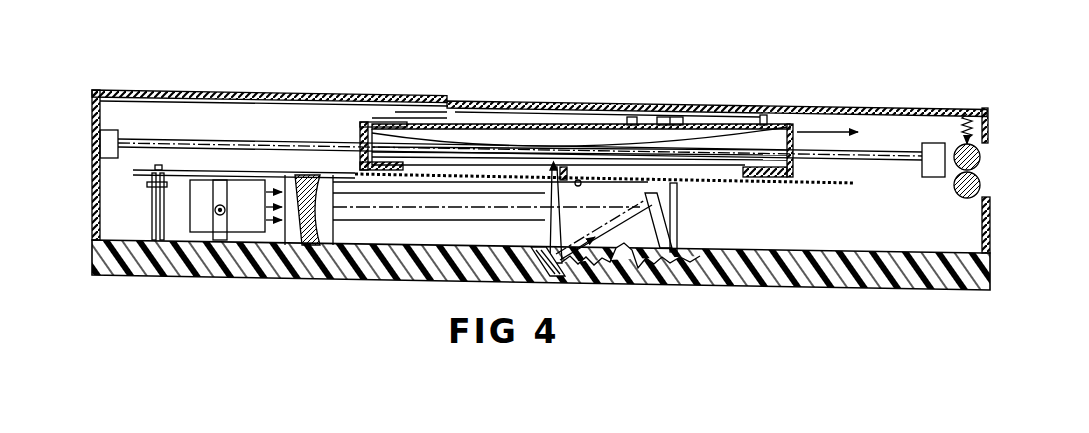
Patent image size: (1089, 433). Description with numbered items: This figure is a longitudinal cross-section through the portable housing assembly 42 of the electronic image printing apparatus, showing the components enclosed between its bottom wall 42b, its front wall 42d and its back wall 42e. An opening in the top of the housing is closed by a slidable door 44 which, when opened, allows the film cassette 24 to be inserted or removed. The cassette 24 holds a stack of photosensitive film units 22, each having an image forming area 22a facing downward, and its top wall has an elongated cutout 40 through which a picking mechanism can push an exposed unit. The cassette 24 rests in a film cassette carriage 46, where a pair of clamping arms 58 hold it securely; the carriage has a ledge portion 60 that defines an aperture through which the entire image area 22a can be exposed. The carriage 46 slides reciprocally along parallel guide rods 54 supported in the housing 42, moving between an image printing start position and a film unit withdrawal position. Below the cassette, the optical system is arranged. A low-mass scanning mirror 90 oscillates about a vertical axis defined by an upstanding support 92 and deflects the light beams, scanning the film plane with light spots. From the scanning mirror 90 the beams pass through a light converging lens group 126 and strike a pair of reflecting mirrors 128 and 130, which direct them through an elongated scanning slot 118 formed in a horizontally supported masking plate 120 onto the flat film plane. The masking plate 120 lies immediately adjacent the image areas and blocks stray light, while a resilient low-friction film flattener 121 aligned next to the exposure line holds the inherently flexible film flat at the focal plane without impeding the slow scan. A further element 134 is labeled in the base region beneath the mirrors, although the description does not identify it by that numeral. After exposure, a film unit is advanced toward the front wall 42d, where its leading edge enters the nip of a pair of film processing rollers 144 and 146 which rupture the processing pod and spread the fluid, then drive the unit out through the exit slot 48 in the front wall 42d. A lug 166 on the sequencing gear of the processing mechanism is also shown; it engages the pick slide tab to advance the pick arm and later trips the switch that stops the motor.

The housing assembly 42 is at (196, 86).
The bottom wall 42b is at (441, 286).
The front wall 42d is at (991, 231).
The back wall 42e is at (92, 199).
The door 44 is at (858, 109).
The film cassette 24 is at (410, 121).
The photosensitive film unit 22 is at (519, 156).
The image forming area 22a is at (720, 176).
The clamping arms 58 is at (650, 117).
The film cassette carriage 46 is at (771, 121).
The ledge portion 60 is at (771, 178).
The guide rods 54 is at (247, 138).
The cutout 40 is at (360, 124).
The scanning mirror 90 is at (250, 186).
The upstanding support 92 is at (150, 170).
The light converging lens group 126 is at (340, 233).
The masking plate 120 is at (475, 178).
The scanning slot 118 is at (552, 180).
The film flattener 121 is at (585, 181).
The reflecting mirror 128 is at (662, 241).
The reflecting mirror 130 is at (545, 248).
The serrated surface 134 is at (628, 283).
The lug 166 is at (970, 124).
The film processing roller 144 is at (956, 147).
The film processing roller 146 is at (981, 184).
The exit slot 48 is at (990, 170).